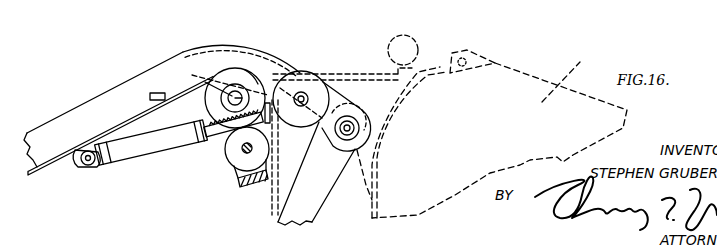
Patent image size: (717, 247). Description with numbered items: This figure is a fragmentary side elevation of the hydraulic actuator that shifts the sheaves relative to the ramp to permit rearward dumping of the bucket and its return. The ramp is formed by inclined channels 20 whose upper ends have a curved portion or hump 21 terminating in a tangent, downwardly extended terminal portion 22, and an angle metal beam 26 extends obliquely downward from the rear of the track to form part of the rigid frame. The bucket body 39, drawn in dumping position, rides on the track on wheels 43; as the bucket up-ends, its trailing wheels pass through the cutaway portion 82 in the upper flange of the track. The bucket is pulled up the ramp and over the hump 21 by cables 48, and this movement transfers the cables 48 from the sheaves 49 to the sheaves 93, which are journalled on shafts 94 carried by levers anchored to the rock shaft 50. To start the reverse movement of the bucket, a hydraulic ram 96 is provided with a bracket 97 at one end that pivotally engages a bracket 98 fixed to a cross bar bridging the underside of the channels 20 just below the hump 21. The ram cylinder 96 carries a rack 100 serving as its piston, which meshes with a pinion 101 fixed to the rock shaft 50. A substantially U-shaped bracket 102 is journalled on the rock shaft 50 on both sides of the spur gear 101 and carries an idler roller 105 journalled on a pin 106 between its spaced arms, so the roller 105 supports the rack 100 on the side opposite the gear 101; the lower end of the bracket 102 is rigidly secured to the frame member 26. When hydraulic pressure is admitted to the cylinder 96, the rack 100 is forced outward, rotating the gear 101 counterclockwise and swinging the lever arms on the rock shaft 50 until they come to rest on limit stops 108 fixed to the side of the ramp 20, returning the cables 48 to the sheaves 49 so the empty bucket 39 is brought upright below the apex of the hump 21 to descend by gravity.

The channels (ramp tracks) 20 is at (53, 125).
The curved portion (hump) 21 is at (190, 55).
The terminal portion (track extension) 22 is at (283, 82).
The angle metal beam (inclined frame member) 26 is at (317, 198).
The bucket body 39 is at (571, 79).
The bucket wheel 43 is at (414, 36).
The cable 48 is at (63, 174).
The sheave 49 is at (238, 70).
The rock shaft 50 is at (207, 76).
The cutaway portion (notch) 82 is at (258, 86).
The sheave 93 is at (317, 48).
The shaft 94 is at (303, 99).
The hydraulic ram (cylinder) 96 is at (150, 147).
The bracket 97 is at (100, 168).
The bracket 98 is at (78, 147).
The rack 100 is at (215, 135).
The pinion (spur gear) 101 is at (266, 90).
The U-shaped bearing bracket 102 is at (245, 194).
The idler roller 105 is at (232, 156).
The pin 106 is at (252, 149).
The limit stop 108 is at (150, 94).